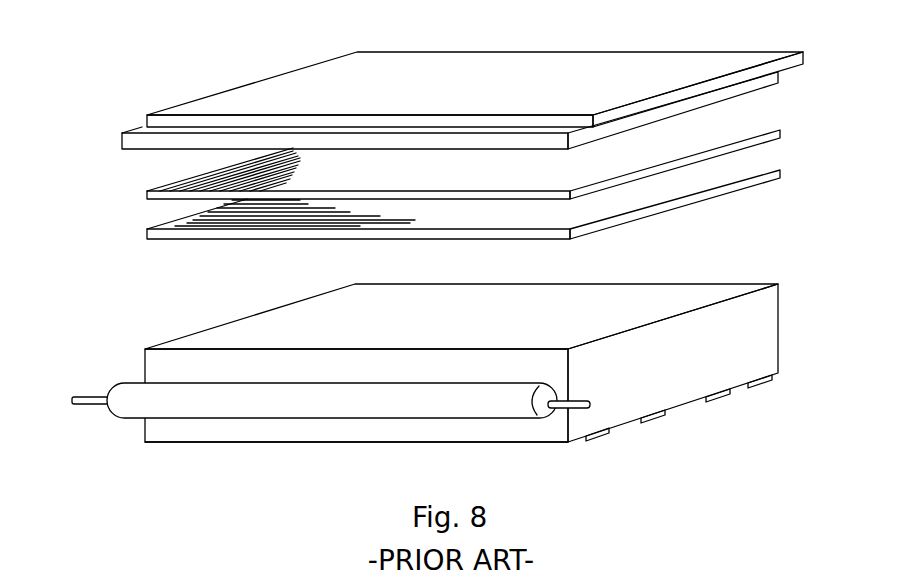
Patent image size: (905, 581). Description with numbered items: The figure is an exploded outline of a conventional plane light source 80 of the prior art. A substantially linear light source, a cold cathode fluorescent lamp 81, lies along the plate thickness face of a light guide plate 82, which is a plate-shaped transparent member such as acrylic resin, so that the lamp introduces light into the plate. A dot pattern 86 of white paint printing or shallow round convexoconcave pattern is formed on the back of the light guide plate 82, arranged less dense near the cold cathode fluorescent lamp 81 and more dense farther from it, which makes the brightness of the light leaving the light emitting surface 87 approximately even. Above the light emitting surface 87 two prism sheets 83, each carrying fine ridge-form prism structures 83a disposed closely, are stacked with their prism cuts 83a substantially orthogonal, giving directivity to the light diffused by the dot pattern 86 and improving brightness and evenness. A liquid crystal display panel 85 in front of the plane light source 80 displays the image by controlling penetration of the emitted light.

The plane light source 80 is at (682, 41).
The cold cathode fluorescent lamp 81 is at (218, 404).
The light guide plate 82 is at (362, 430).
The prism sheets 83 is at (733, 174).
The prism structures 83a is at (187, 221).
The liquid crystal display panel 85 is at (327, 80).
The dot pattern 86 is at (715, 402).
The light emitting surface 87 is at (697, 294).